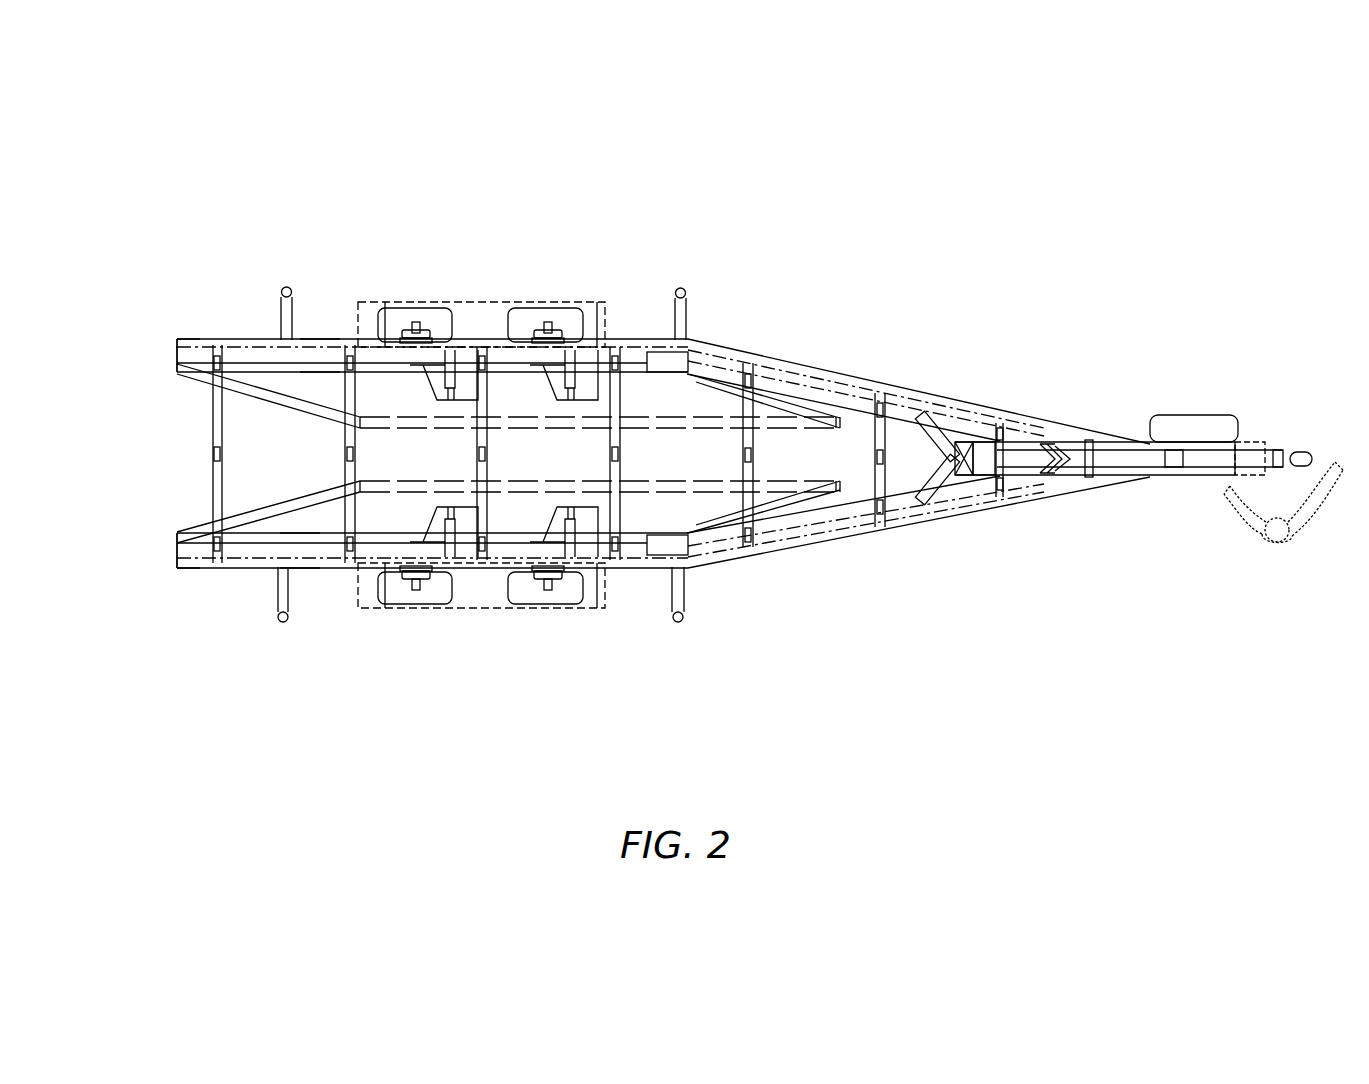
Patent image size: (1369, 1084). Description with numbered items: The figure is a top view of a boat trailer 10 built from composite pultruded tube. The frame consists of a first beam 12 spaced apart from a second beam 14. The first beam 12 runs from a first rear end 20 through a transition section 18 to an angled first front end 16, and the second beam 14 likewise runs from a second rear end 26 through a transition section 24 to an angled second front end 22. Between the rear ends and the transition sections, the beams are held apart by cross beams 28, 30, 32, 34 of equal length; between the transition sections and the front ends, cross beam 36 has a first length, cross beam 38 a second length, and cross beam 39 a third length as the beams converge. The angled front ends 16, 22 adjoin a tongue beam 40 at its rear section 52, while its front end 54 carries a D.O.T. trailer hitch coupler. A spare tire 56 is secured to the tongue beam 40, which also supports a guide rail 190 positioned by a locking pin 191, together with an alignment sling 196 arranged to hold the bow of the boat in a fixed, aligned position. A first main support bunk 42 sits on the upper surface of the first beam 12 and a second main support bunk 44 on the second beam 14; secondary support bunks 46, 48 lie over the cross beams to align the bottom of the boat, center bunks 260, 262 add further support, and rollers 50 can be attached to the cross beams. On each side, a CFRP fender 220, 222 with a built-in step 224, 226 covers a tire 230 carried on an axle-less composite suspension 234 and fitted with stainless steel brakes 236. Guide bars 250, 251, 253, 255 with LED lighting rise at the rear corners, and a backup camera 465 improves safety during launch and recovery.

The boat trailer 10 is at (973, 300).
The first beam 12 is at (235, 338).
The second beam 14 is at (250, 570).
The first front end 16 is at (1071, 422).
The transition section 18 is at (689, 340).
The first rear end 20 is at (178, 338).
The second front end 22 is at (1113, 485).
The transition section 24 is at (689, 572).
The second rear end 26 is at (176, 560).
The cross beam 28 is at (214, 423).
The cross beam 30 is at (347, 475).
The cross beam 32 is at (479, 475).
The cross beam 34 is at (612, 475).
The cross beam 36 is at (745, 475).
The cross beam 38 is at (886, 475).
The cross beam 39 is at (996, 430).
The tongue beam 40 is at (1187, 480).
The first main support bunk 42 is at (317, 346).
The second main support bunk 44 is at (297, 549).
The secondary support bunk 46 is at (294, 503).
The secondary support bunk 48 is at (829, 422).
The rollers 50 is at (214, 457).
The rear section 52 is at (981, 461).
The front end 54 is at (1296, 453).
The spare tire 56 is at (1185, 420).
The guide rail 190 is at (968, 471).
The locking pin 191 is at (1001, 488).
The alignment sling 196 is at (945, 441).
The fender 220 is at (358, 611).
The fender 222 is at (359, 300).
The built-in step 224 is at (485, 316).
The built-in step 226 is at (481, 586).
The tires 230 is at (433, 316).
The composite suspension 234 is at (434, 553).
The brakes 236 is at (548, 326).
The guide bar 250 is at (285, 627).
The guide bar 251 is at (287, 285).
The guide bar 253 is at (678, 624).
The guide bar 255 is at (680, 286).
The center bunk 260 is at (706, 488).
The center bunk 262 is at (712, 419).
The backup camera 465 is at (278, 624).